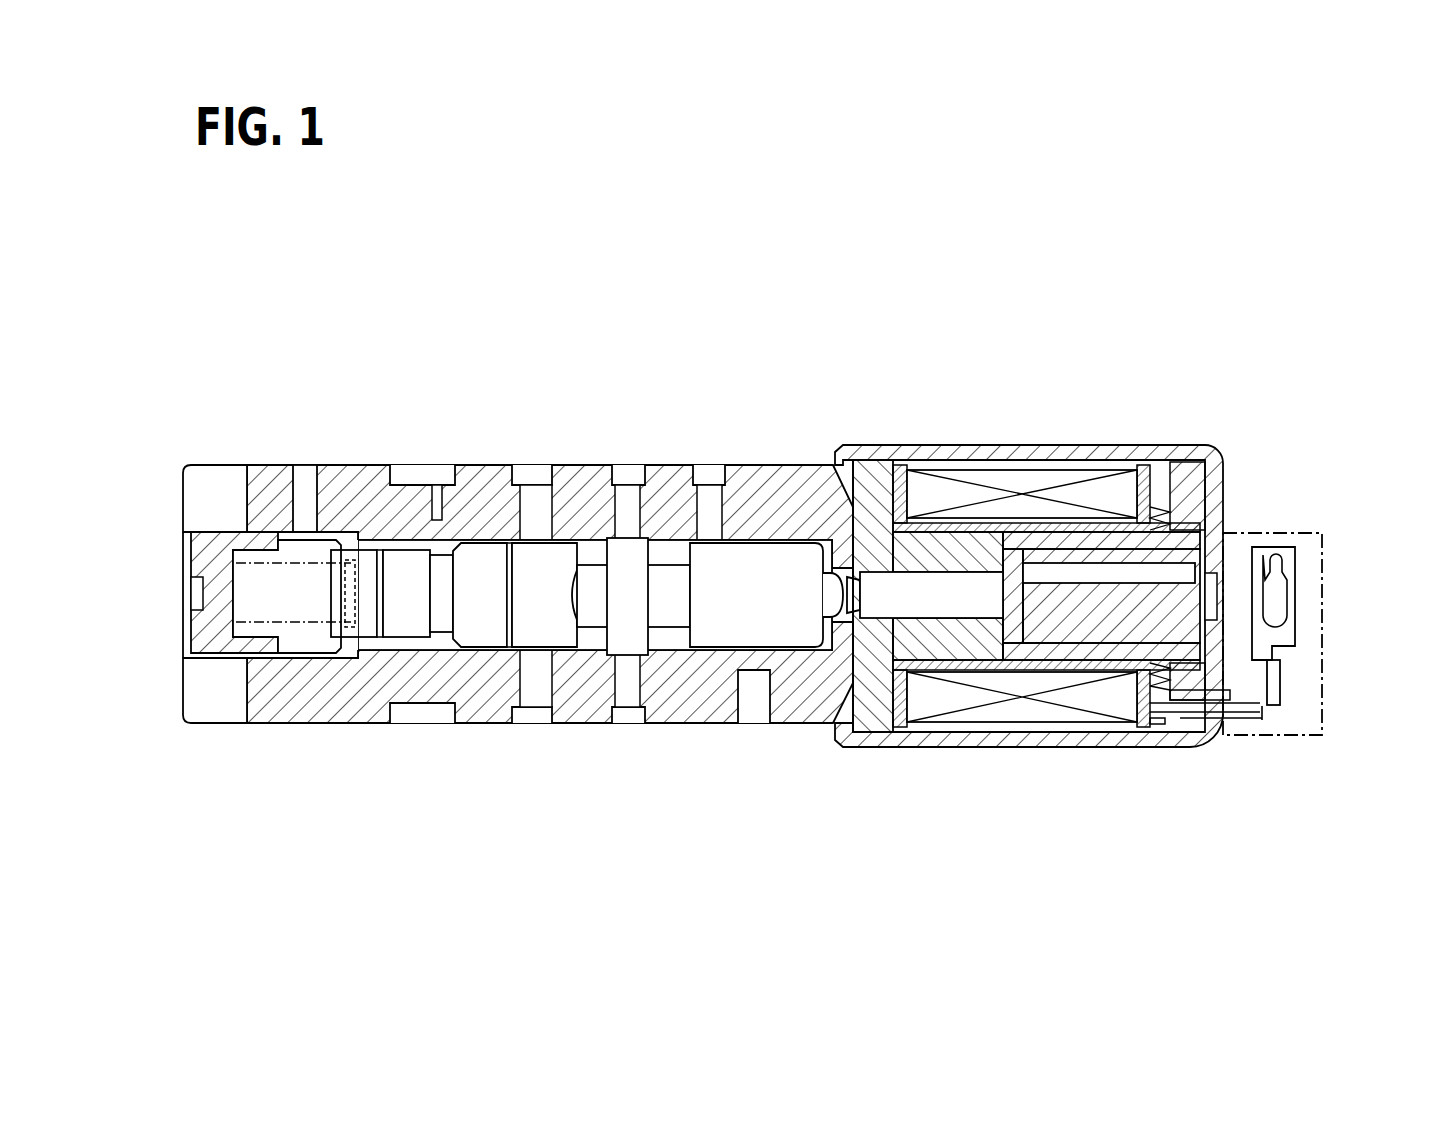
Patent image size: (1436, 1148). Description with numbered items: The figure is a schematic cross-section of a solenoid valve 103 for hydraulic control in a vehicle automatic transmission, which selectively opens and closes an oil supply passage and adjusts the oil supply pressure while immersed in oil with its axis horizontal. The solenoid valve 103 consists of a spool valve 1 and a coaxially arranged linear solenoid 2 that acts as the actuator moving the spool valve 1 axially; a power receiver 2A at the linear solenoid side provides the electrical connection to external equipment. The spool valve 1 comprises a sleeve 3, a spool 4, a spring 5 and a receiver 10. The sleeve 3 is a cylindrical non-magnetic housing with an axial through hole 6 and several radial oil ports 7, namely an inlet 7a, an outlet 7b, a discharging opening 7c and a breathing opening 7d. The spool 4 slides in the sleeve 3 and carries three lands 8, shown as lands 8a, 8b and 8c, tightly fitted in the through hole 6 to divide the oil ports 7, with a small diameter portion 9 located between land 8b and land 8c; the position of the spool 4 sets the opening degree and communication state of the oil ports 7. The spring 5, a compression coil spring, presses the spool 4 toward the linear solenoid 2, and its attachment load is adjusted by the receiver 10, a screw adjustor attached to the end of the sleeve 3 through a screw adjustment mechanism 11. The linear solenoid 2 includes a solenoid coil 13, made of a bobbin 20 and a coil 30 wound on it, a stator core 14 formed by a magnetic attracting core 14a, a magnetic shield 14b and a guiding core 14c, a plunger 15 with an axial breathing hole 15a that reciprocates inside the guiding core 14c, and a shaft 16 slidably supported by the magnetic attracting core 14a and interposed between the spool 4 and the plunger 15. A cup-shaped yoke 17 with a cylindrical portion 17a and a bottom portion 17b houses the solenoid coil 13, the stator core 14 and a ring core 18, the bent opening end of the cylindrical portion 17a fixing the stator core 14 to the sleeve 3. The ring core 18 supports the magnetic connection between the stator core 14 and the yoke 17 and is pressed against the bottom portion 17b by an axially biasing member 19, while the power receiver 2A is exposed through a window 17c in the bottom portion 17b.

The solenoid valve 103 is at (767, 300).
The spool valve 1 is at (739, 371).
The linear solenoid 2 is at (897, 371).
The power receiver 2A is at (1323, 712).
The sleeve 3 is at (467, 745).
The spool 4 is at (765, 558).
The spring 5 is at (322, 627).
The through hole 6 is at (304, 648).
The oil ports 7 is at (707, 400).
The inlet 7a is at (540, 520).
The outlet 7b is at (631, 520).
The discharging opening 7c is at (713, 520).
The breathing opening 7d is at (437, 519).
The lands 8 is at (513, 800).
The land 8a is at (490, 627).
The land 8b is at (557, 622).
The land 8c is at (755, 635).
The small diameter portion 9 is at (680, 595).
The receiver 10 is at (221, 555).
The screw adjustment mechanism 11 is at (221, 655).
The solenoid coil 13 is at (932, 812).
The stator core 14 is at (1140, 393).
The magnetic attracting core 14a is at (947, 547).
The magnetic shield 14b is at (1030, 547).
The guiding core 14c is at (1105, 545).
The plunger 15 is at (1102, 620).
The breathing hole 15a is at (1072, 573).
The shaft 16 is at (890, 600).
The yoke 17 is at (1387, 445).
The cylindrical portion 17a is at (1157, 447).
The bottom portion 17b is at (1217, 517).
The window 17c is at (1220, 697).
The ring core 18 is at (1190, 683).
The axially biasing member 19 is at (1163, 640).
The bobbin 20 is at (900, 703).
The coil 30 is at (1020, 710).